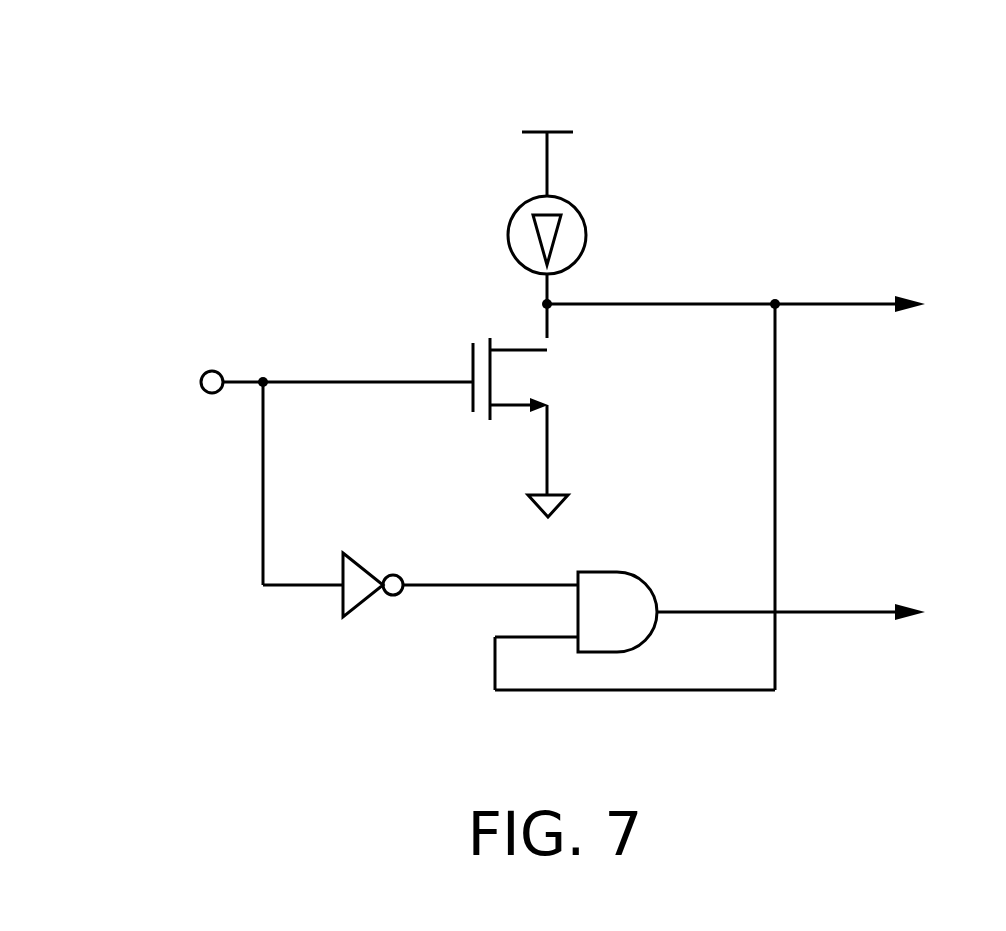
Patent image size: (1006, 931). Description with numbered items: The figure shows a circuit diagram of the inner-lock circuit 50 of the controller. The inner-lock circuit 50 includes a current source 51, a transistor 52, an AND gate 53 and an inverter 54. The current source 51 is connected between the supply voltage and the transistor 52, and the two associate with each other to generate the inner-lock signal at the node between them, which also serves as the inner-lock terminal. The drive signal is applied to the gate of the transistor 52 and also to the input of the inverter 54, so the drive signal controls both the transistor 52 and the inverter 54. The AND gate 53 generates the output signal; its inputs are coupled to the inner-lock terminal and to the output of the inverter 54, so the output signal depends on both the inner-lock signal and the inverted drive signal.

The inner-lock circuit 50 is at (930, 82).
The current source 51 is at (588, 248).
The transistor 52 is at (548, 377).
The AND gate 53 is at (610, 562).
The inverter 54 is at (370, 562).